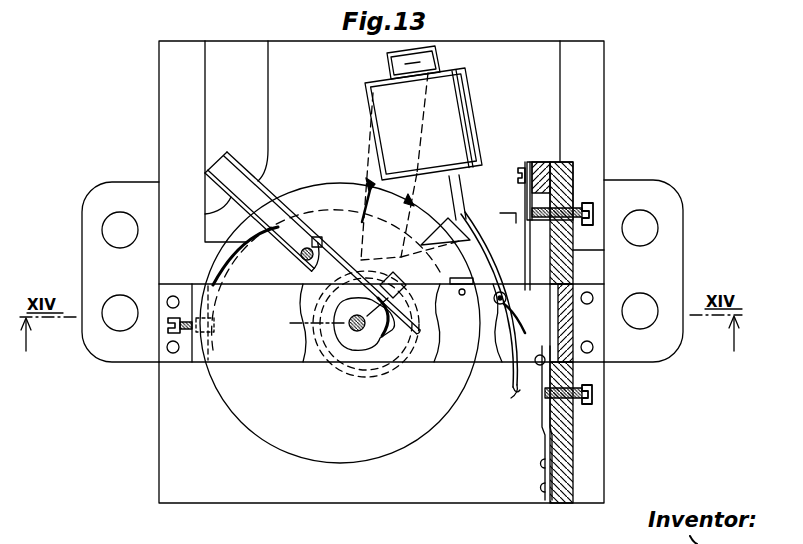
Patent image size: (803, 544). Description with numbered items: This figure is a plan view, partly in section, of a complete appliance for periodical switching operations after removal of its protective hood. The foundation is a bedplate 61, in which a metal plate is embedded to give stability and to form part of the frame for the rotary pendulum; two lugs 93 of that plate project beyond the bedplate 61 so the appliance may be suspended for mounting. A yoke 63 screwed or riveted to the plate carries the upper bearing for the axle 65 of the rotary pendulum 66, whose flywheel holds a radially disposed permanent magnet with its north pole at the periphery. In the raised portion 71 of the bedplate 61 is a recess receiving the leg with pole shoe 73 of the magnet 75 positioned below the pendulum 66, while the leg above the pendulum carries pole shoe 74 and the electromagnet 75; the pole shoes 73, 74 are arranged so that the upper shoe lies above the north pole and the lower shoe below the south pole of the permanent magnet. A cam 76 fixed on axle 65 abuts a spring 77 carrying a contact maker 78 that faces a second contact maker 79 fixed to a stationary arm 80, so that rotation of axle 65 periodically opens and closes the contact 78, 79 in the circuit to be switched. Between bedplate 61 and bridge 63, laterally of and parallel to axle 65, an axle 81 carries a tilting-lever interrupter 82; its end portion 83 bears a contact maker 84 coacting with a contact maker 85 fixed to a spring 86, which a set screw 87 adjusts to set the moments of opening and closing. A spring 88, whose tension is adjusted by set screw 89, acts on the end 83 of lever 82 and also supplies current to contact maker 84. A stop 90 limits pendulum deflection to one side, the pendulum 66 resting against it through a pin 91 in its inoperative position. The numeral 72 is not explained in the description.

The bedplate 61 is at (180, 468).
The yoke 63 is at (213, 354).
The axle 65 is at (344, 336).
The rotary pendulum 66 is at (403, 428).
The raised portion 71 is at (535, 92).
The pin 72 is at (371, 182).
The pole shoe 73 is at (398, 195).
The pole shoe 74 is at (434, 197).
The electromagnet 75 is at (447, 100).
The cam 76 is at (372, 350).
The spring 77 is at (312, 243).
The contact maker 78 is at (320, 228).
The contact maker 79 is at (298, 260).
The stationary arm 80 is at (228, 250).
The axle 81 is at (508, 299).
The tilting-lever interrupter 82 is at (468, 216).
The end portion 83 is at (510, 366).
The contact maker 84 is at (524, 390).
The contact maker 85 is at (570, 374).
The spring 86 is at (543, 432).
The set screw 87 is at (572, 405).
The spring 88 is at (548, 254).
The set screw 89 is at (560, 196).
The stop 90 is at (512, 226).
The pin 91 is at (462, 295).
The lugs 93 is at (127, 344).